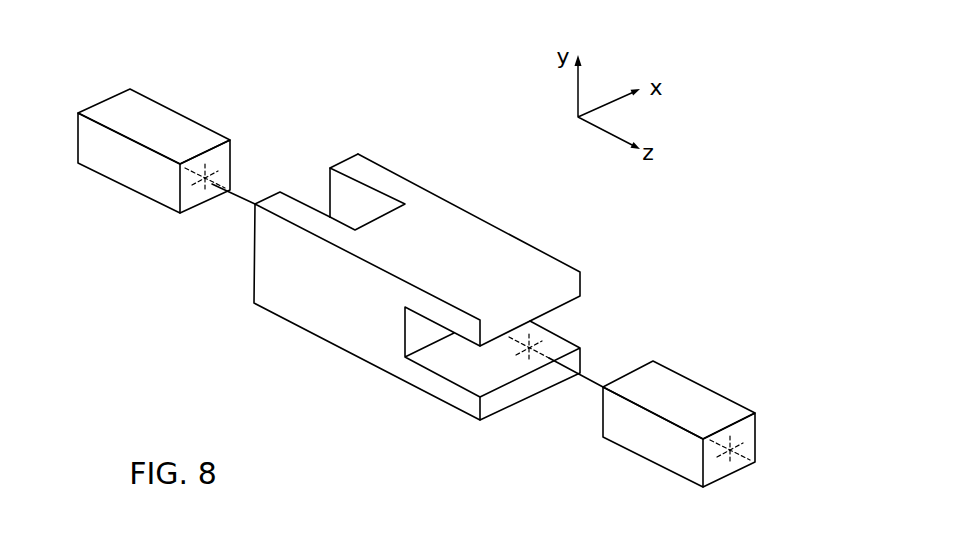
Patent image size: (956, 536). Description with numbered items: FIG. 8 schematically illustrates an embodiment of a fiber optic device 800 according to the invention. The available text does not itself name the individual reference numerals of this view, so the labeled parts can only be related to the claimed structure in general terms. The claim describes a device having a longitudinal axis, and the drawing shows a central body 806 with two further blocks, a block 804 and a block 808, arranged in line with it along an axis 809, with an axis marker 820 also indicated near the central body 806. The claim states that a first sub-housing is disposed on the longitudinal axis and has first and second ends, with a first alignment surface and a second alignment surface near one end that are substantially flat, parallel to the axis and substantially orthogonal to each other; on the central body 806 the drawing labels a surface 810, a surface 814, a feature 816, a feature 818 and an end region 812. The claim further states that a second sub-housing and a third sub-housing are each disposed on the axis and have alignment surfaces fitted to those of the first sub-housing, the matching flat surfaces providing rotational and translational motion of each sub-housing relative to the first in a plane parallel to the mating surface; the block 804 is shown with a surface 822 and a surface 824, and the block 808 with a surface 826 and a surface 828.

The optical assembly 800 is at (143, 334).
The first optical element block 804 is at (143, 137).
The holder body 806 is at (466, 251).
The second optical element block 808 is at (681, 445).
The optical axis 809 is at (233, 200).
The step surface 810 is at (320, 202).
The second end of body 812 is at (567, 326).
The step wall 814 is at (337, 178).
The notch 816 is at (302, 197).
The slot 818 is at (462, 380).
The optical axis marker 820 is at (568, 310).
The top surface of first block 822 is at (198, 122).
The side surface of first block 824 is at (102, 157).
The top surface of second block 826 is at (670, 397).
The side surface of second block 828 is at (653, 463).